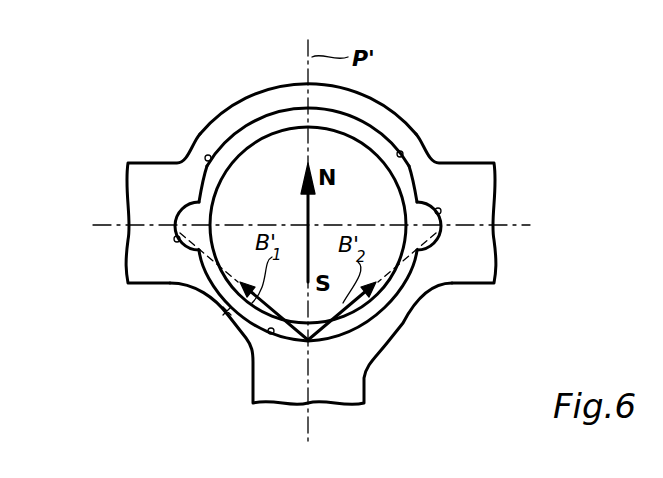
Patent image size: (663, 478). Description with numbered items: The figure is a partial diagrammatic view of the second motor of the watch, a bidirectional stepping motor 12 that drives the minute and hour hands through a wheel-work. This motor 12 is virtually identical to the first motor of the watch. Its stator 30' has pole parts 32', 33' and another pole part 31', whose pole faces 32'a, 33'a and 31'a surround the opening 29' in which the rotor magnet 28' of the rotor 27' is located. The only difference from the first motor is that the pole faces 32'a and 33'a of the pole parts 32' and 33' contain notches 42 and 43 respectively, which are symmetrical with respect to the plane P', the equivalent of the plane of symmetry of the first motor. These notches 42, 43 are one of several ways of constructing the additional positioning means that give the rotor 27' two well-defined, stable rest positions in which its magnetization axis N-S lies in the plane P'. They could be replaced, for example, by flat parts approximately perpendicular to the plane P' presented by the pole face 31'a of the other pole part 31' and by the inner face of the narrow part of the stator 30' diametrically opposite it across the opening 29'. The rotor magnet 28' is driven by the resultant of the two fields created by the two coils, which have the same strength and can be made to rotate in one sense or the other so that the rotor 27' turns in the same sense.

The bidirectional stepping motor 12 is at (308, 261).
The rotor 27' is at (181, 327).
The rotor magnet 28' is at (300, 188).
The opening 29' is at (332, 117).
The stator 30' is at (516, 315).
The pole part 31' is at (311, 368).
The pole face 31'a is at (285, 331).
The pole part 32' is at (117, 208).
The pole face 32'a is at (169, 150).
The pole part 33' is at (499, 208).
The pole face 33'a is at (453, 156).
The notch 42 is at (173, 240).
The notch 43 is at (443, 210).